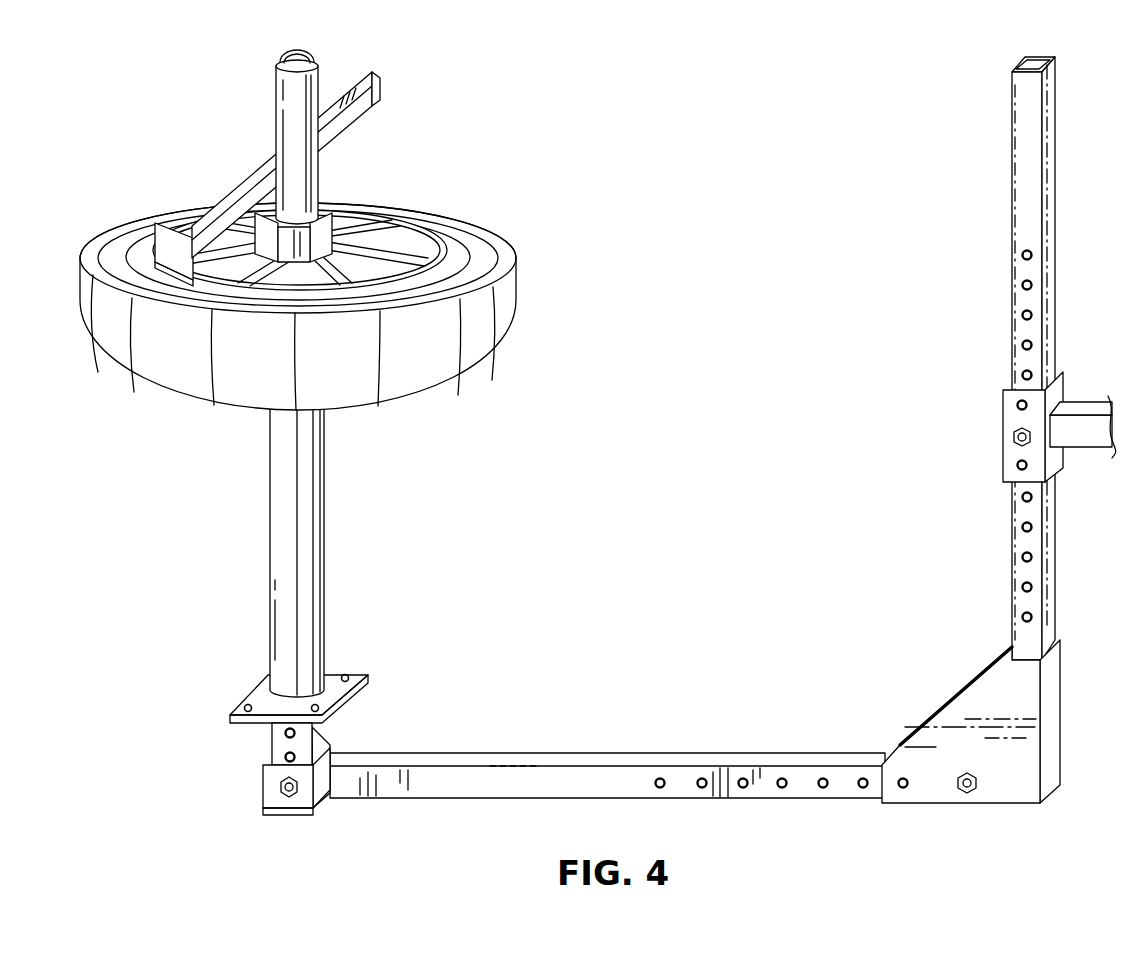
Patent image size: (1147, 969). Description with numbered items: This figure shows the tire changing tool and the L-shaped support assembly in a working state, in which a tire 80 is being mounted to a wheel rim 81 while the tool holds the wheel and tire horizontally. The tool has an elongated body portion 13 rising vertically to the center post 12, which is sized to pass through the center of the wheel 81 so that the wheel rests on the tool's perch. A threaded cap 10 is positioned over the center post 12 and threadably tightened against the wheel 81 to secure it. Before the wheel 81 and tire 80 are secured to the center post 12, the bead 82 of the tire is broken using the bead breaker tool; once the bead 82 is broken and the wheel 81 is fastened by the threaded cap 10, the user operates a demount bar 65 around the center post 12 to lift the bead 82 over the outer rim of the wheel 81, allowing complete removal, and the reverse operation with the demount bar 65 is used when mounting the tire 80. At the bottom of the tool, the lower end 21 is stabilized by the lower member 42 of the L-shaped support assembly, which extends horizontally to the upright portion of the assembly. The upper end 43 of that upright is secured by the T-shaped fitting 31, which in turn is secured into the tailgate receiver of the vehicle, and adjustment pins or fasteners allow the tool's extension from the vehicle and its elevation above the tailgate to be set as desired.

The threaded cap 10 is at (330, 224).
The center post 12 is at (310, 84).
The elongated body portion 13 is at (307, 527).
The lower end 21 is at (398, 663).
The T-shaped fitting 31 is at (964, 434).
The lower member 42 is at (543, 758).
The upper end 43 is at (1052, 303).
The demount bar 65 is at (212, 134).
The tire 80 is at (492, 325).
The wheel rim 81 is at (396, 248).
The bead 82 is at (448, 256).